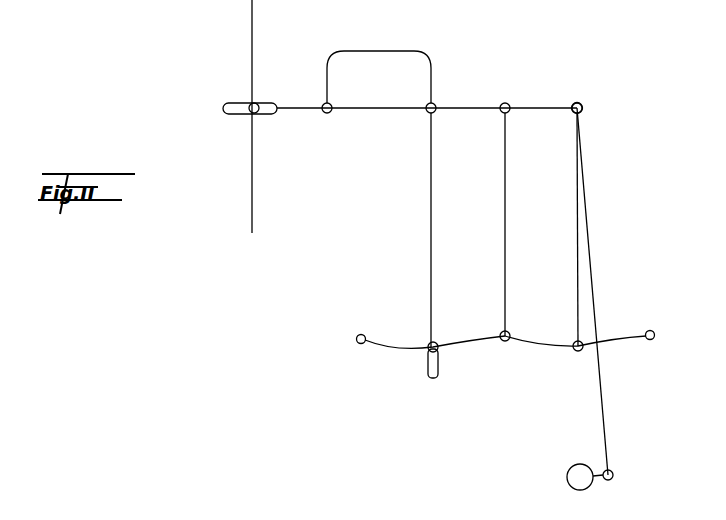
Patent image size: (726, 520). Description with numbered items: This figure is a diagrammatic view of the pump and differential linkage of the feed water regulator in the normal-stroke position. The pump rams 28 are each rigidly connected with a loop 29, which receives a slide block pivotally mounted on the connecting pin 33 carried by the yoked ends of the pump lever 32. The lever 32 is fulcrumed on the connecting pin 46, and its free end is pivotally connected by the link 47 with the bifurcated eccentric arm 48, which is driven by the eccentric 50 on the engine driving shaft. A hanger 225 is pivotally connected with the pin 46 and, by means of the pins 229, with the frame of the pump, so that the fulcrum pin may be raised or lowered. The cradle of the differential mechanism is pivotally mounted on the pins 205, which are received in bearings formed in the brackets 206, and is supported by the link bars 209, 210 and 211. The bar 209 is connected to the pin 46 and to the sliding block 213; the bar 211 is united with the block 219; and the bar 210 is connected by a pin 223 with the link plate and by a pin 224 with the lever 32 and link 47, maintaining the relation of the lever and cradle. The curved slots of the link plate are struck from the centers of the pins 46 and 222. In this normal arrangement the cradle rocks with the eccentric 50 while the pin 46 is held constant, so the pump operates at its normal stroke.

The pump ram 28 is at (250, 58).
The loop 29 is at (224, 109).
The connecting pin 33 is at (258, 104).
The pump lever 32 is at (296, 110).
The pin 229 is at (333, 105).
The hanger 225 is at (388, 51).
The connecting pin 46 is at (428, 111).
The pin 224 is at (508, 104).
The link 47 is at (545, 106).
The pin 222 is at (574, 112).
The link bar 209 is at (430, 256).
The link bar 210 is at (503, 250).
The link bar 211 is at (576, 256).
The eccentric arm 48 is at (604, 391).
The eccentric 50 is at (614, 474).
The pin 205 is at (428, 351).
The sliding block 213 is at (438, 343).
The pin 223 is at (502, 341).
The block 219 is at (576, 351).
The bracket 206 is at (430, 379).